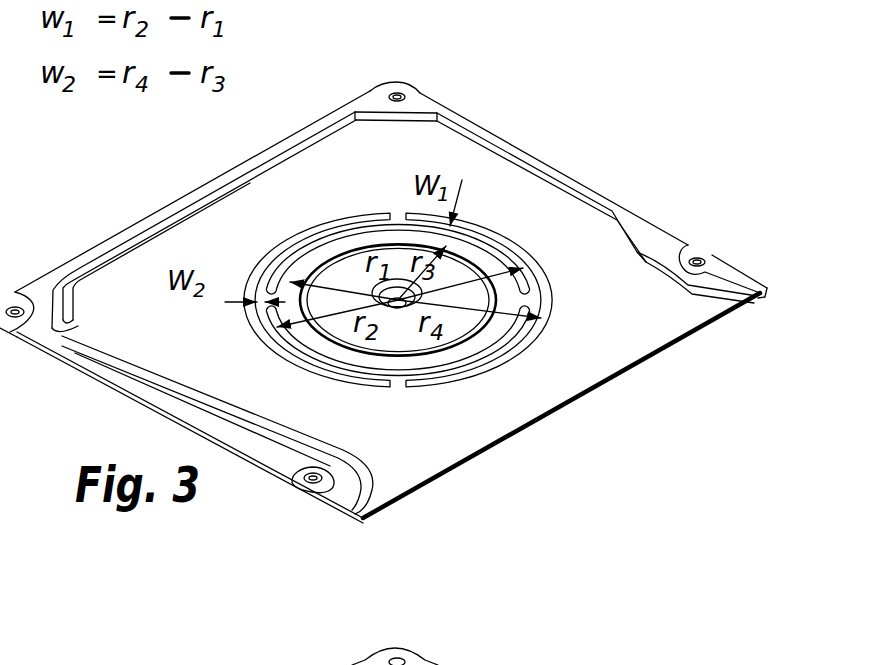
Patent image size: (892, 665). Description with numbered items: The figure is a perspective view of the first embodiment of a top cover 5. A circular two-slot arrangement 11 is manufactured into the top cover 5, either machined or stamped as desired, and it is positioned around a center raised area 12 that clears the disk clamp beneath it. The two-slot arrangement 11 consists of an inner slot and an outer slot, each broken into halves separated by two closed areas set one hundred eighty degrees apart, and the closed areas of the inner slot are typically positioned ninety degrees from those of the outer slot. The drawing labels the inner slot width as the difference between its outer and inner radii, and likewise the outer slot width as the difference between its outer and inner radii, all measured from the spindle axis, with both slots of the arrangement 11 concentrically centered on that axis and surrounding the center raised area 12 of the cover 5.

The top cover 5 is at (593, 383).
The circular 2-slot arrangement 11 is at (272, 248).
The center raised area 12 is at (387, 258).